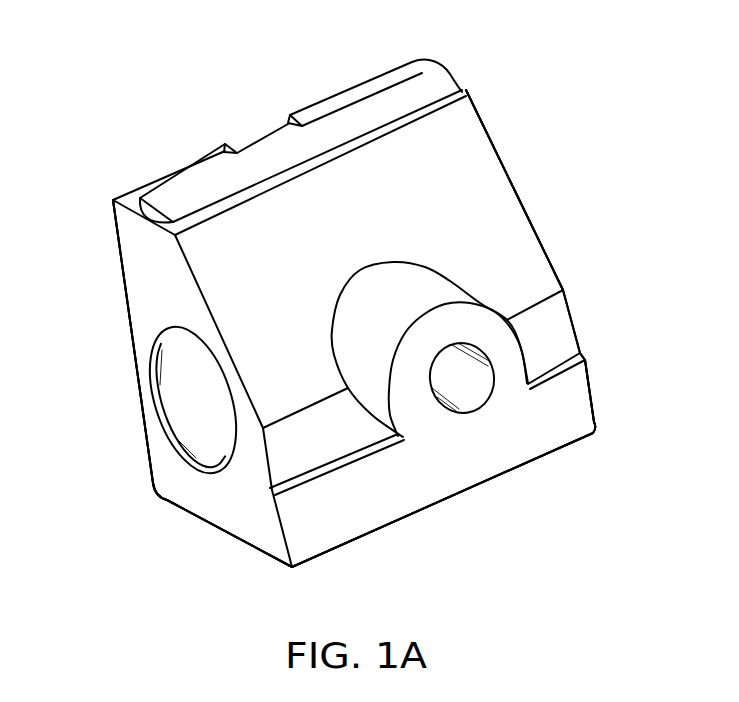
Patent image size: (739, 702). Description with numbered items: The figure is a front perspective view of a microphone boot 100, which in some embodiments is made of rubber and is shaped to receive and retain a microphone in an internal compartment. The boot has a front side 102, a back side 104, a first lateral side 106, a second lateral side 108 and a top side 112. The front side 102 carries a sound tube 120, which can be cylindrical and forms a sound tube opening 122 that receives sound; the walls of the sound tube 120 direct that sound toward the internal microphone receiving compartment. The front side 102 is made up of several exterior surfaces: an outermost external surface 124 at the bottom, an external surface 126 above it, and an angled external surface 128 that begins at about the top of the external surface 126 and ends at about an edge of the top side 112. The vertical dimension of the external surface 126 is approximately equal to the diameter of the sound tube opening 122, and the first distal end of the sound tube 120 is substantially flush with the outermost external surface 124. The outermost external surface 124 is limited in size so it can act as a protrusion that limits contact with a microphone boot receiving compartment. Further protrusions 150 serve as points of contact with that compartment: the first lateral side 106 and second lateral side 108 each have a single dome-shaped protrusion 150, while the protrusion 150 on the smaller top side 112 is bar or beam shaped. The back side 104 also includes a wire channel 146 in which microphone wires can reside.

The microphone boot 100 is at (156, 72).
The front side 102 is at (503, 92).
The back side 104 is at (170, 175).
The first lateral side 106 is at (138, 260).
The second lateral side 108 is at (481, 119).
The top side 112 is at (336, 92).
The sound tube 120 is at (513, 377).
The sound tube opening 122 is at (462, 380).
The outermost external surface 124 is at (318, 527).
The external surface 126 is at (327, 440).
The angled external surface 128 is at (222, 271).
The wire channel 146 is at (258, 140).
The protrusion 150 is at (418, 83).